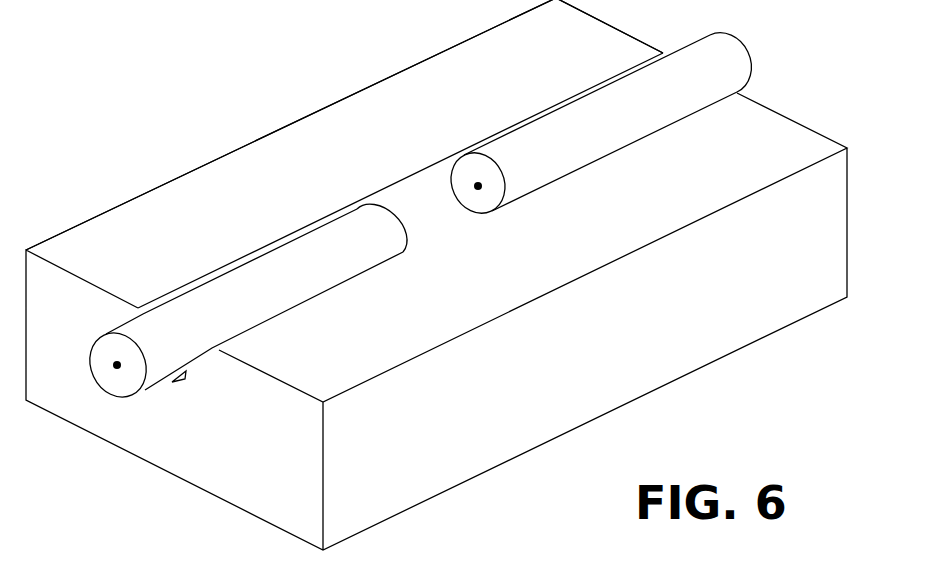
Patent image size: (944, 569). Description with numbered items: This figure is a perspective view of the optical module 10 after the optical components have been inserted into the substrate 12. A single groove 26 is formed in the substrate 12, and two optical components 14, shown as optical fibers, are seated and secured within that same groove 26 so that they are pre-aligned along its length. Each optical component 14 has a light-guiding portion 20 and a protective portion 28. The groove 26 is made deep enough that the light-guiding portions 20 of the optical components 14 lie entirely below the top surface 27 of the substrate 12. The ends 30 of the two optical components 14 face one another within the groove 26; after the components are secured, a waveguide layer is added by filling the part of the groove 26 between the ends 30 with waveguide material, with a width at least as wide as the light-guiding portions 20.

The optical module 10 is at (232, 93).
The substrate 12 is at (240, 457).
The optical component 14 is at (312, 250).
The light-guiding portion 20 is at (114, 367).
The groove 26 is at (207, 270).
The top surface 27 is at (177, 212).
The protective portion 28 is at (102, 355).
The end 30 is at (387, 212).